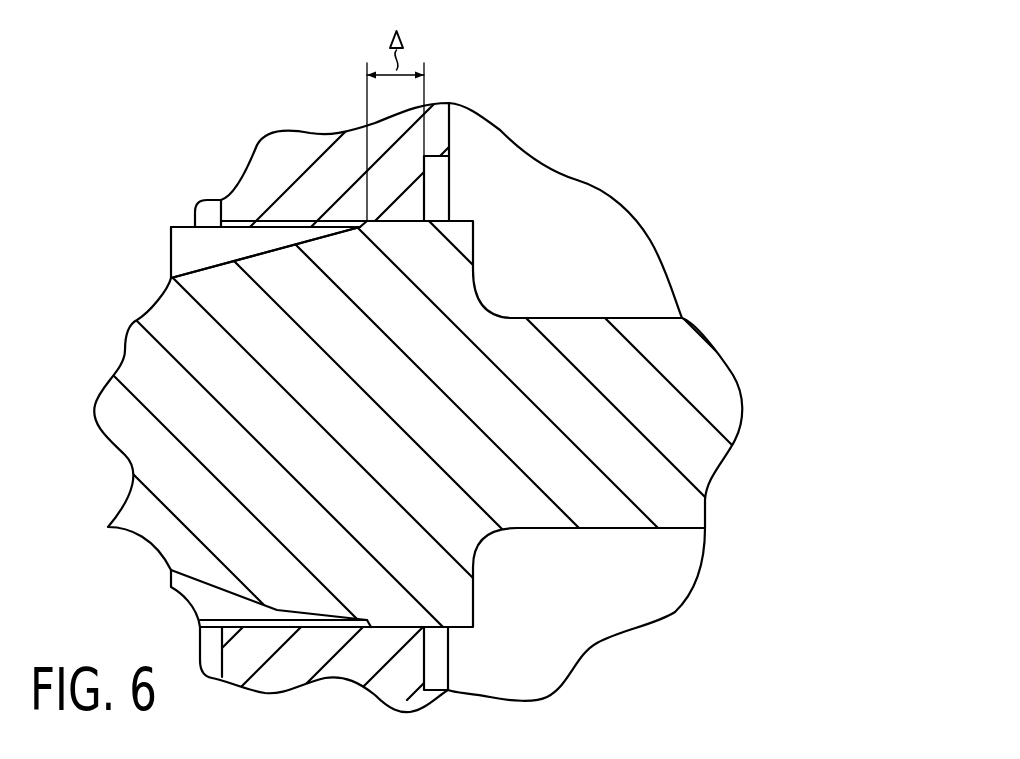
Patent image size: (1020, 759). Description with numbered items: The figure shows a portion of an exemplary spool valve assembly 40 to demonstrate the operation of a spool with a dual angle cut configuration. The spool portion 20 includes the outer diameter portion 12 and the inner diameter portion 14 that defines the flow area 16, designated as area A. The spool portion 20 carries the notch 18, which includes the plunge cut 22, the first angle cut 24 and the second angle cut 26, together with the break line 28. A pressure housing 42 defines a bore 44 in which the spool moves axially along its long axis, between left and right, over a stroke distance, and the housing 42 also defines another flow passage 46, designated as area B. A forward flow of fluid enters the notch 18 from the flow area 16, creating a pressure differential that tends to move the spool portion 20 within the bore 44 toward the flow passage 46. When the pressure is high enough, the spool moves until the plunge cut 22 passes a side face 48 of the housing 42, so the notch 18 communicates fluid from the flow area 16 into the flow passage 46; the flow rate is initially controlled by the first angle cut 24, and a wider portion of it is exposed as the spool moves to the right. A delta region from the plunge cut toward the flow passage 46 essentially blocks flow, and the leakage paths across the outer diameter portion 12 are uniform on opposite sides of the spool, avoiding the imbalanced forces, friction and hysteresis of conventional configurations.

The outer diameter portion 12 is at (398, 612).
The inner diameter portion 14 is at (125, 353).
The flow area 16 is at (141, 282).
The notch 18 is at (351, 150).
The spool portion 20 is at (340, 627).
The plunge cut 22 is at (360, 232).
The first angle cut 24 is at (307, 232).
The second angle cut 26 is at (217, 245).
The break line 28 is at (290, 237).
The spool valve assembly 40 is at (510, 377).
The pressure housing 42 is at (305, 668).
The bore 44 is at (237, 677).
The flow passage 46 is at (623, 276).
The side face 48 is at (450, 140).